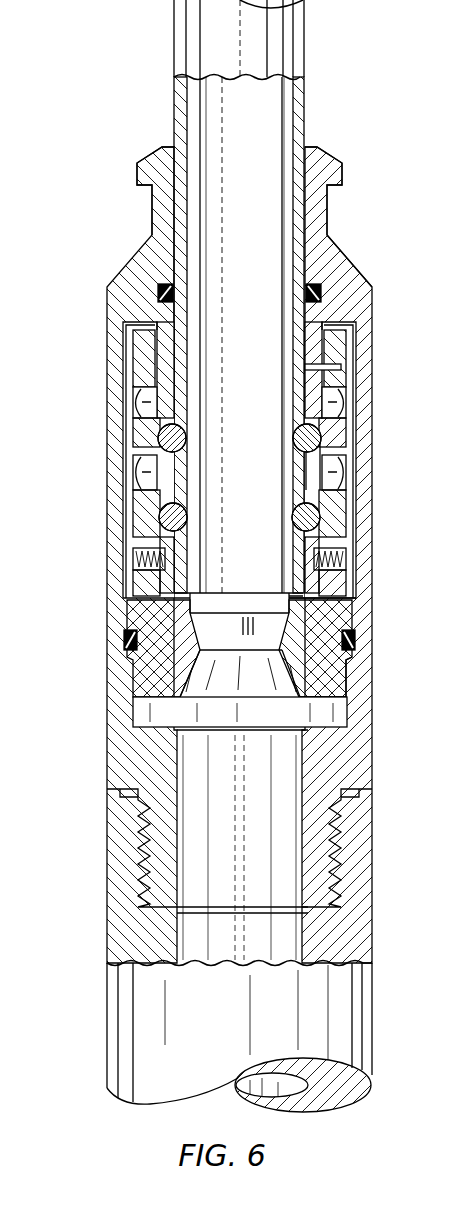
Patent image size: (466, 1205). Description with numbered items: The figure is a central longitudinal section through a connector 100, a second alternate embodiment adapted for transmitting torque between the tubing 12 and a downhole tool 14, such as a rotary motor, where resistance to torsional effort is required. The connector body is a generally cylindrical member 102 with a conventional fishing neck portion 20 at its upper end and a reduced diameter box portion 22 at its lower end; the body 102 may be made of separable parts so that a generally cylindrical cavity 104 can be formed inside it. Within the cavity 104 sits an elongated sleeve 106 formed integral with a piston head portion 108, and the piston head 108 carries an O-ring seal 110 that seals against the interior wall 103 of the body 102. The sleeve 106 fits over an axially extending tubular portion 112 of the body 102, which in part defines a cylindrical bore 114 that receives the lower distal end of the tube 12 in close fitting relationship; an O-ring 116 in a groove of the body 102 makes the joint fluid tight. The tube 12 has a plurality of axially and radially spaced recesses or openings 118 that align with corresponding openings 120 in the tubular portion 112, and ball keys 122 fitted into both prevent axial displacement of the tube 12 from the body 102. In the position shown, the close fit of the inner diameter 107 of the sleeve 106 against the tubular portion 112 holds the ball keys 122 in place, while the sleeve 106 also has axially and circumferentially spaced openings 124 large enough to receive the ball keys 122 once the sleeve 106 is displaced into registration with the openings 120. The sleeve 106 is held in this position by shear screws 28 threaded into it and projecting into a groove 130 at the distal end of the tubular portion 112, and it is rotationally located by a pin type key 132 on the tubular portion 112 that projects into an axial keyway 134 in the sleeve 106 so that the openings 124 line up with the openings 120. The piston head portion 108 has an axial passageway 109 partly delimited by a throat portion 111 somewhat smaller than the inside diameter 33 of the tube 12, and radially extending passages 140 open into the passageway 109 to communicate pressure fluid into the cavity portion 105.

The tubing 12 is at (305, 53).
The tool 14 is at (374, 1022).
The fishing neck portion 20 is at (333, 158).
The reduced diameter box portion 22 is at (344, 877).
The shear screws 28 is at (135, 560).
The inside diameter of the tube 33 is at (188, 172).
The connector 100 is at (374, 297).
The generally cylindrical member 102 is at (373, 424).
The interior wall 103 is at (356, 612).
The generally cylindrical cavity 104 is at (277, 723).
The cavity portion 105 is at (108, 378).
The elongated sleeve 106 is at (336, 512).
The inner diameter of the sleeve 107 is at (150, 338).
The piston head portion 108 is at (350, 690).
The axial passageway 109 is at (240, 673).
The O-ring seal 110 is at (354, 641).
The throat portion 111 is at (212, 645).
The tubular portion 112 is at (314, 460).
The cylindrical bore 114 is at (297, 216).
The O-ring 116 is at (173, 291).
The recesses or openings 118 is at (187, 437).
The openings 120 is at (297, 420).
The ball keys 122 is at (183, 453).
The openings 124 is at (160, 397).
The groove 130 is at (190, 558).
The pin type key 132 is at (340, 348).
The keyway 134 is at (342, 367).
The radially extending passages 140 is at (125, 634).